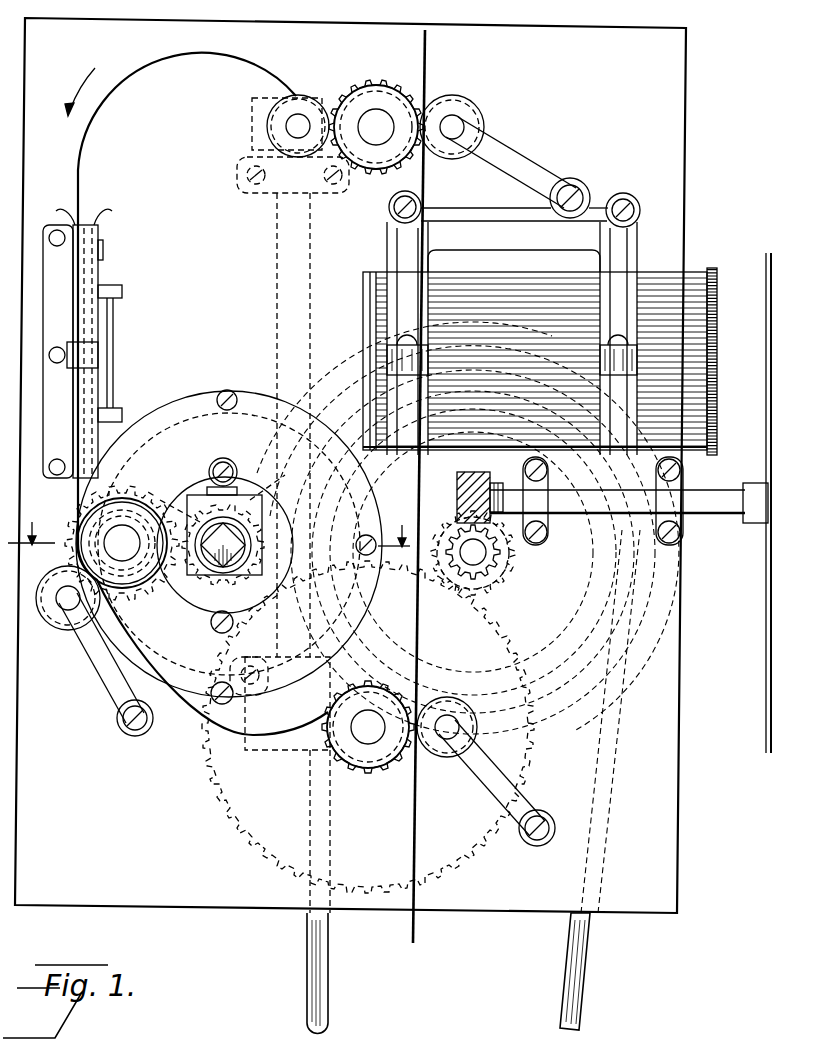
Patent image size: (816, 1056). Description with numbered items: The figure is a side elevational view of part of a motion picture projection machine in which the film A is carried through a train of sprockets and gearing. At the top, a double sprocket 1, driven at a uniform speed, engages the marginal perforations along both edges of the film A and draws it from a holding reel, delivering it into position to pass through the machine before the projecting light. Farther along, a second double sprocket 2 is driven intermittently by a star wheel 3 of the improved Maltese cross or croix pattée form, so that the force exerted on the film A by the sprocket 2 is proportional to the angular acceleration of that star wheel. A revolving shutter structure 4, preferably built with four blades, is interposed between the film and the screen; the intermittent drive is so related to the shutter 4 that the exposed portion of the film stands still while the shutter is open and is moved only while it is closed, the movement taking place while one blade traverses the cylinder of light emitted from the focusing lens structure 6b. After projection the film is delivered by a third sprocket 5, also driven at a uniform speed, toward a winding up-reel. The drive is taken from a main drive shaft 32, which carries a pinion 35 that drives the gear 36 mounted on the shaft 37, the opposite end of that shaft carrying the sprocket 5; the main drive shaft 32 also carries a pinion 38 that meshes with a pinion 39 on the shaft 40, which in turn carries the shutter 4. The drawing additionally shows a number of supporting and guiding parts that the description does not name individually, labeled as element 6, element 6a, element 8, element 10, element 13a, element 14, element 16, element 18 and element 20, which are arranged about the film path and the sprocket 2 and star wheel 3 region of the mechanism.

The double sprocket 1 is at (372, 82).
The double sprocket 2 is at (82, 520).
The star wheel 3 is at (215, 543).
The revolving shutter structure 4 is at (768, 593).
The third sprocket 5 is at (400, 690).
The rod 6 is at (86, 320).
The guide bracket 6a is at (100, 270).
The focusing lens structure 6b is at (497, 297).
The disc plate 8 is at (268, 524).
The plate 10 is at (186, 621).
The pawl 13a is at (245, 486).
The lever 14 is at (213, 483).
The ratchet wheel 16 is at (223, 545).
The screw 18 is at (219, 460).
The gear 20 is at (163, 503).
The main drive shaft 32 is at (482, 560).
The pinion 35 is at (500, 550).
The gear 36 is at (466, 862).
The shaft 37 is at (369, 742).
The pinion 38 is at (480, 578).
The pinion 39 is at (457, 487).
The shaft 40 is at (580, 500).
The film A is at (78, 138).